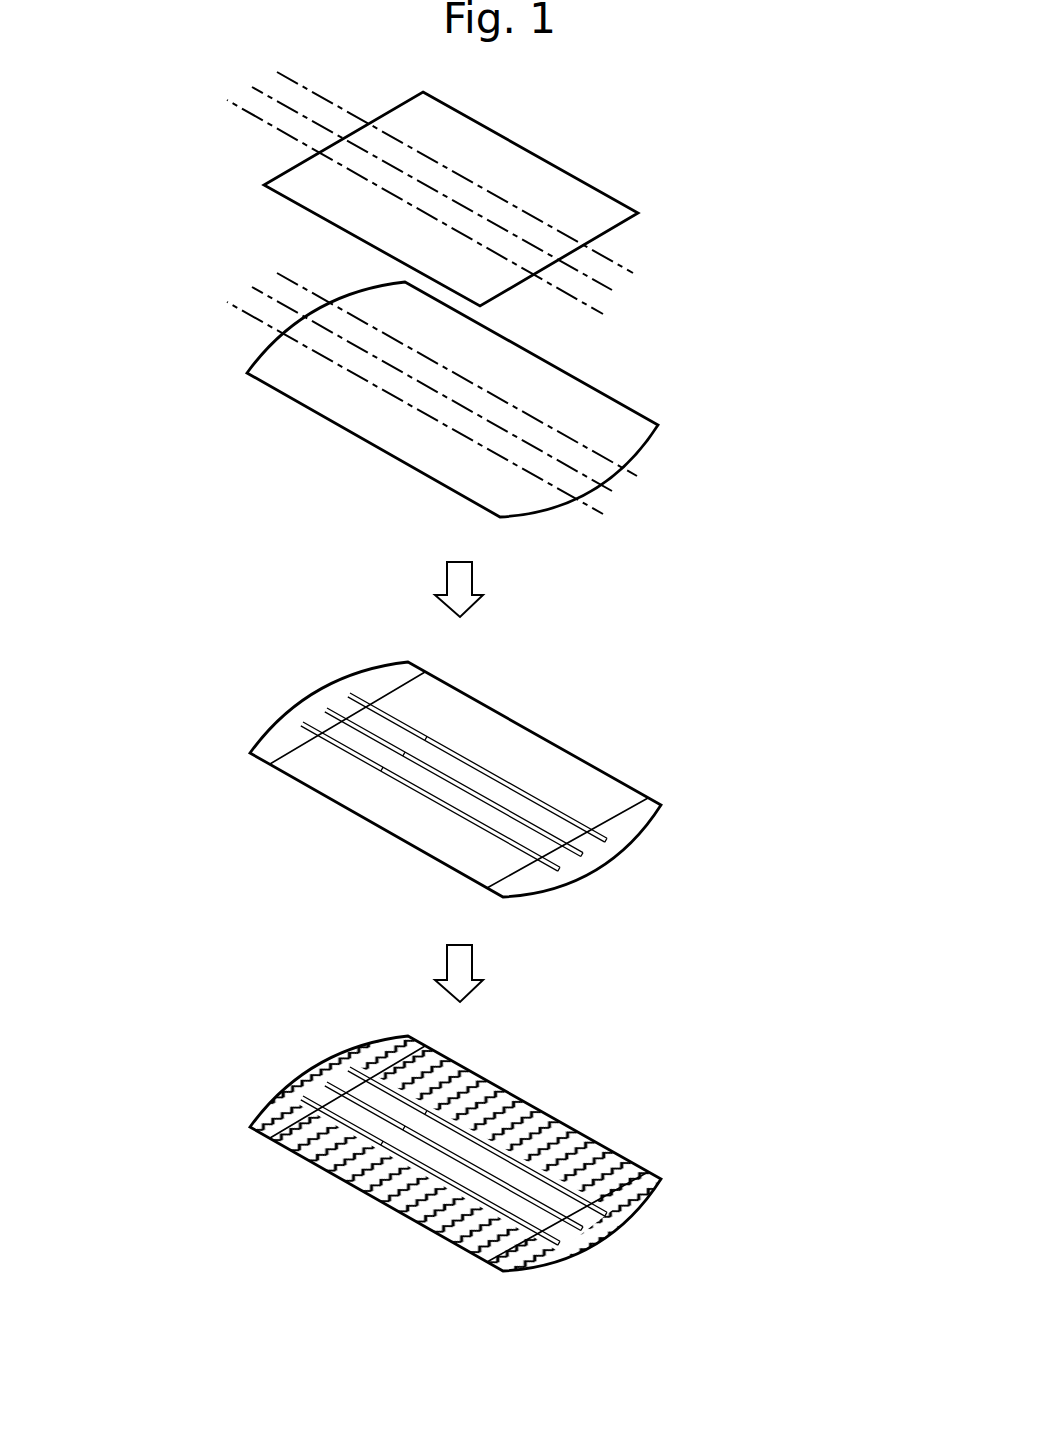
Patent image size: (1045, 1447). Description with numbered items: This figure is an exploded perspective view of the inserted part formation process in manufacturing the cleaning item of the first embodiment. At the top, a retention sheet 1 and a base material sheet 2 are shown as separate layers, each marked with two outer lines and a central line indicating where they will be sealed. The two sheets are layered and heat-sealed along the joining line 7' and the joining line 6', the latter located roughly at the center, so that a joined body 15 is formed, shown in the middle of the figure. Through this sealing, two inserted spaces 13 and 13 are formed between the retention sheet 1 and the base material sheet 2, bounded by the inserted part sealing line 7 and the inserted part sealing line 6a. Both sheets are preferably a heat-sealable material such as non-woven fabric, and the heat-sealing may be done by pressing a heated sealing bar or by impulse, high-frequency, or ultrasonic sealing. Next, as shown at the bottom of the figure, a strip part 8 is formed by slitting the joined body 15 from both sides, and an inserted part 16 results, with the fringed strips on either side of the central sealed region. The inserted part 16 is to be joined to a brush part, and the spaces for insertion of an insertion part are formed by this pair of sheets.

The retention sheet 1 is at (280, 195).
The base material sheet 2 is at (283, 396).
The joining line 7' is at (490, 323).
The joining line 6' is at (479, 318).
The joined body 15 is at (287, 854).
The inserted part 16 is at (287, 1221).
The inserted part sealing line 7 is at (467, 1013).
The inserted part sealing line 6a is at (522, 798).
The inserted space 13 is at (577, 834).
The strip part 8 is at (577, 1132).